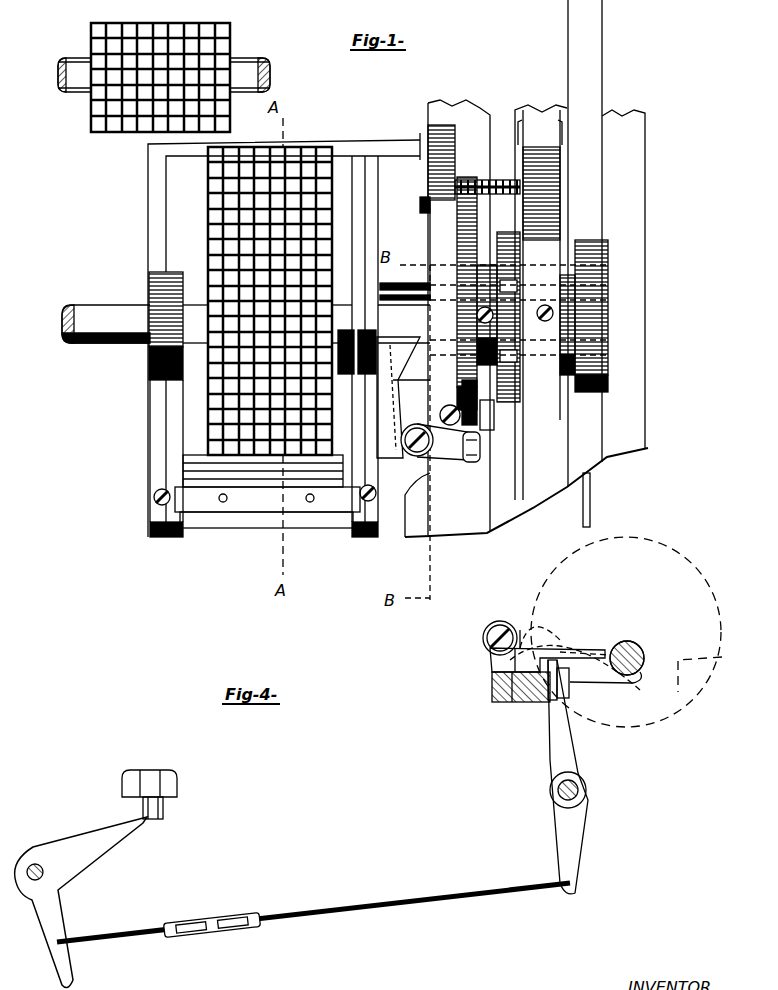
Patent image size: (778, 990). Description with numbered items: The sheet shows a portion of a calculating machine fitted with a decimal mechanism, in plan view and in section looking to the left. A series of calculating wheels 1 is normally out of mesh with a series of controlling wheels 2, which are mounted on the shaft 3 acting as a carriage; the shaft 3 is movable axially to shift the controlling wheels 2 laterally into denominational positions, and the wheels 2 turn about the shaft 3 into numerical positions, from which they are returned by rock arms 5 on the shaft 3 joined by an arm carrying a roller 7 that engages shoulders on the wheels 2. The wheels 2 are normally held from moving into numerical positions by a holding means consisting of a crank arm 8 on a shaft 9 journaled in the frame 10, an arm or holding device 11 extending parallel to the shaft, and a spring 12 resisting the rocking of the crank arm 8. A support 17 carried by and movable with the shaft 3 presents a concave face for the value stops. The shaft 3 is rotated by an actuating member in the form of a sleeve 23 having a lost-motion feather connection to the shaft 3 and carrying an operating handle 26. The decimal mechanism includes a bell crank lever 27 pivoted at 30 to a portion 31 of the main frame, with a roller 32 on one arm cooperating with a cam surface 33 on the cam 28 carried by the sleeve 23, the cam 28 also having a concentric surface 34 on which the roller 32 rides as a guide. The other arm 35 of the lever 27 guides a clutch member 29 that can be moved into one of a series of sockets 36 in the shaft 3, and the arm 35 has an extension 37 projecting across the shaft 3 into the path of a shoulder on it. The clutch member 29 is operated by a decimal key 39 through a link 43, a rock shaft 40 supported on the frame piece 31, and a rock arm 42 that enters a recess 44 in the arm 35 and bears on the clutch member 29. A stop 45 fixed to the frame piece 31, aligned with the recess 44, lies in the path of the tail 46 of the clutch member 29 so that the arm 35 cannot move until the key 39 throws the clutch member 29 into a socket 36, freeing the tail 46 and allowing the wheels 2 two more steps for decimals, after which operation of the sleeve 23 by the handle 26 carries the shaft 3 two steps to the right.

In FIG. 1, the calculating wheels 1 is at (208, 35).
In FIG. 1, the controlling wheels 2 is at (228, 210).
In FIG. 1, the shaft 3 is at (97, 343).
In FIG. 4, the shaft 3 is at (640, 652).
In FIG. 1, the rock arms 5 is at (178, 412).
In FIG. 1, the roller 7 is at (190, 462).
In FIG. 1, the crank arm 8 is at (424, 172).
In FIG. 1, the shaft 9 is at (470, 180).
In FIG. 1, the frame 10 is at (534, 128).
In FIG. 1, the holding device 11 is at (331, 138).
In FIG. 1, the spring 12 is at (507, 180).
In FIG. 1, the support 17 is at (182, 228).
In FIG. 1, the sleeve 23 is at (600, 305).
In FIG. 1, the operating handle 26 is at (597, 153).
In FIG. 1, the lever 27 is at (453, 452).
In FIG. 4, the lever 27 is at (490, 661).
In FIG. 1, the cam 28 is at (478, 393).
In FIG. 4, the cam 28 is at (657, 553).
In FIG. 1, the clutch member 29 is at (413, 352).
In FIG. 4, the clutch member 29 is at (585, 650).
In FIG. 1, the pivot 30 is at (415, 456).
In FIG. 4, the frame portion 31 is at (535, 702).
In FIG. 1, the roller 32 is at (479, 450).
In FIG. 4, the roller 32 is at (492, 623).
In FIG. 4, the cam surface 33 is at (518, 646).
In FIG. 1, the concentric surface 34 is at (482, 418).
In FIG. 4, the concentric surface 34 is at (556, 568).
In FIG. 1, the lever arm 35 is at (468, 345).
In FIG. 1, the sockets 36 is at (425, 320).
In FIG. 4, the sockets 36 is at (618, 645).
In FIG. 4, the extension 37 is at (635, 686).
In FIG. 4, the key 39 is at (172, 790).
In FIG. 4, the rock shaft 40 is at (582, 787).
In FIG. 4, the rock arm 42 is at (553, 753).
In FIG. 4, the link 43 is at (345, 908).
In FIG. 4, the recess 44 is at (551, 658).
In FIG. 1, the stop 45 is at (404, 380).
In FIG. 4, the tail 46 is at (572, 685).